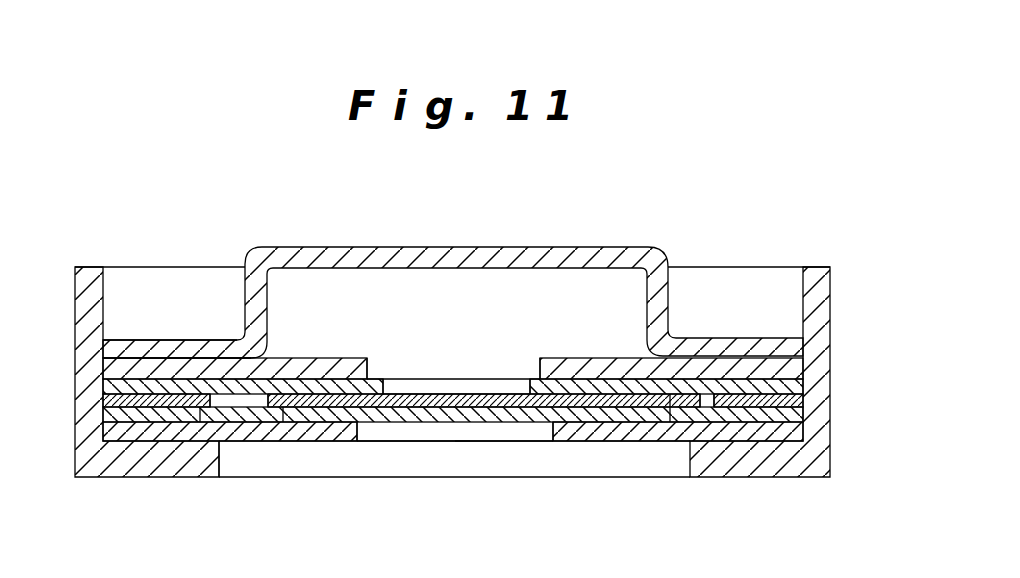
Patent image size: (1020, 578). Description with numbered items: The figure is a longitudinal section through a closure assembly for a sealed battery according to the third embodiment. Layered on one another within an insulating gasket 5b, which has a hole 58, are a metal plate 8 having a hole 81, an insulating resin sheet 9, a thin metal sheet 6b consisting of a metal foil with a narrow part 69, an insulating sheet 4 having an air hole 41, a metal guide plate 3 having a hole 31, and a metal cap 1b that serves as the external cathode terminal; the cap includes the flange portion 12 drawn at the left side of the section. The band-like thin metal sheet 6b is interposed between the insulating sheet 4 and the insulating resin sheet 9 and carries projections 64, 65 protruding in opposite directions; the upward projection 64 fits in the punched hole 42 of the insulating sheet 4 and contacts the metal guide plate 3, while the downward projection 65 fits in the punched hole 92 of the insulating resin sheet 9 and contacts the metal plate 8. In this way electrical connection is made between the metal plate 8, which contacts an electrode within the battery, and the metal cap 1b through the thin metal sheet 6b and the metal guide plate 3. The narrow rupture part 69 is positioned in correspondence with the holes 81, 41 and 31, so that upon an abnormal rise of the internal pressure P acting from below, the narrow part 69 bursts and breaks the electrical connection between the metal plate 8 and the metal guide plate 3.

The metal cap 1b is at (660, 292).
The flange 12 is at (172, 348).
The hole 31 is at (495, 360).
The metal guide plate 3 is at (787, 373).
The insulating sheet 4 is at (787, 390).
The thin metal sheet 6b is at (785, 399).
The insulating resin sheet 9 is at (787, 427).
The metal plate 8 is at (800, 434).
The insulating gasket 5b is at (758, 460).
The hole 58 is at (247, 465).
The projection 65 is at (230, 415).
The punched hole 92 is at (283, 410).
The narrow part 69 is at (375, 405).
The hole 81 is at (441, 430).
The pressure P is at (462, 441).
The air hole 41 is at (498, 388).
The projection 64 is at (665, 388).
The punched hole 42 is at (703, 396).